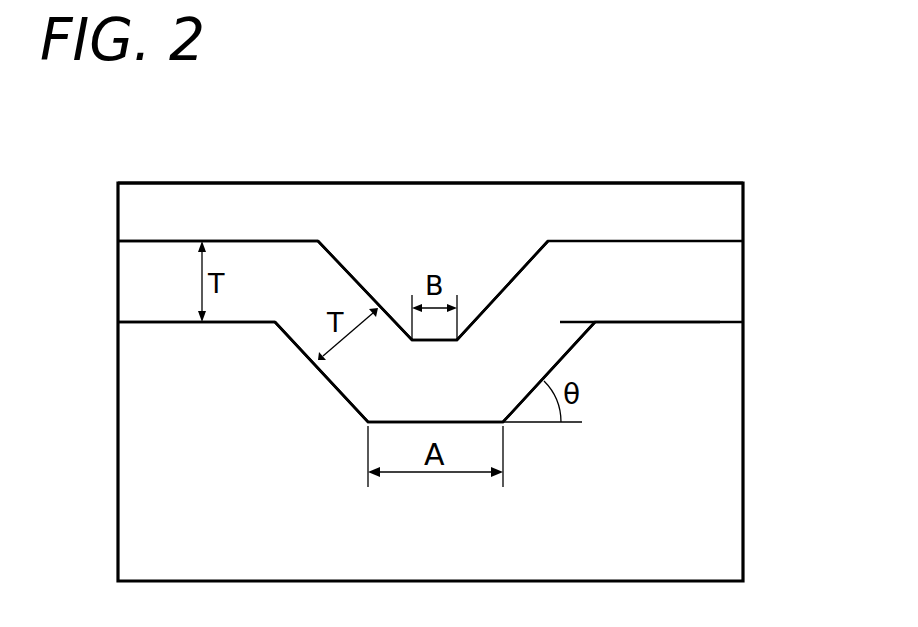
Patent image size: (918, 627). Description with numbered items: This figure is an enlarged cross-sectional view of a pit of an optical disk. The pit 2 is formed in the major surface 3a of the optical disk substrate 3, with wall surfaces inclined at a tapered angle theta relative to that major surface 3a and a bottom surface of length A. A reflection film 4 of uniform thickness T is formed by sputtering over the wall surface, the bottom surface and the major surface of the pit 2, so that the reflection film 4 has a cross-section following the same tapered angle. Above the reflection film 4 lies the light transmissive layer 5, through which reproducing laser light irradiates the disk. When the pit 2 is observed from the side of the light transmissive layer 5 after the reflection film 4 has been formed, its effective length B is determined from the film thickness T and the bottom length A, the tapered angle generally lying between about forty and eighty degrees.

The pit 2 is at (458, 422).
The optical disk substrate 3 is at (723, 437).
The major surface 3a is at (641, 308).
The reflection film 4 is at (725, 284).
The light transmissive layer 5 is at (728, 210).